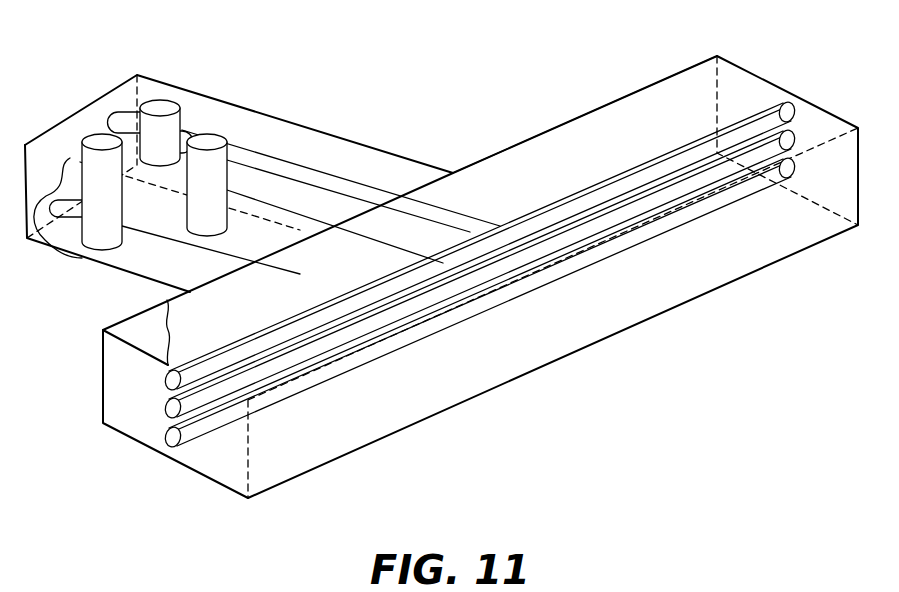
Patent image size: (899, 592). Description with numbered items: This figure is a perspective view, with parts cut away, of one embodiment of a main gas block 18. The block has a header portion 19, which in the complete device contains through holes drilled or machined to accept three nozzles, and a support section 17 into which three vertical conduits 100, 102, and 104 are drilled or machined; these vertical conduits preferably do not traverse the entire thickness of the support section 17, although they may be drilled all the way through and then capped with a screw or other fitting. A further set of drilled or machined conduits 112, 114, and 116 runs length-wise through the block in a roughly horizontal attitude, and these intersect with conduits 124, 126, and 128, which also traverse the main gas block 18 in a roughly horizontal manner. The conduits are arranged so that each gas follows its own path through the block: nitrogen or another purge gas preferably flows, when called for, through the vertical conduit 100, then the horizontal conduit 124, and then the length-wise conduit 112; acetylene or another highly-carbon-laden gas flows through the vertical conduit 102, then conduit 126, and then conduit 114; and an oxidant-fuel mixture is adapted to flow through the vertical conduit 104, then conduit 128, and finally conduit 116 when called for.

The main gas block 18 is at (547, 55).
The header portion 19 is at (565, 140).
The support section 17 is at (326, 140).
The vertical conduit 100 is at (163, 99).
The vertical conduit 102 is at (213, 133).
The vertical conduit 104 is at (100, 133).
The conduit 112 is at (166, 380).
The conduit 114 is at (166, 408).
The conduit 116 is at (166, 438).
The conduit 124 is at (279, 158).
The conduit 126 is at (366, 208).
The conduit 128 is at (173, 257).